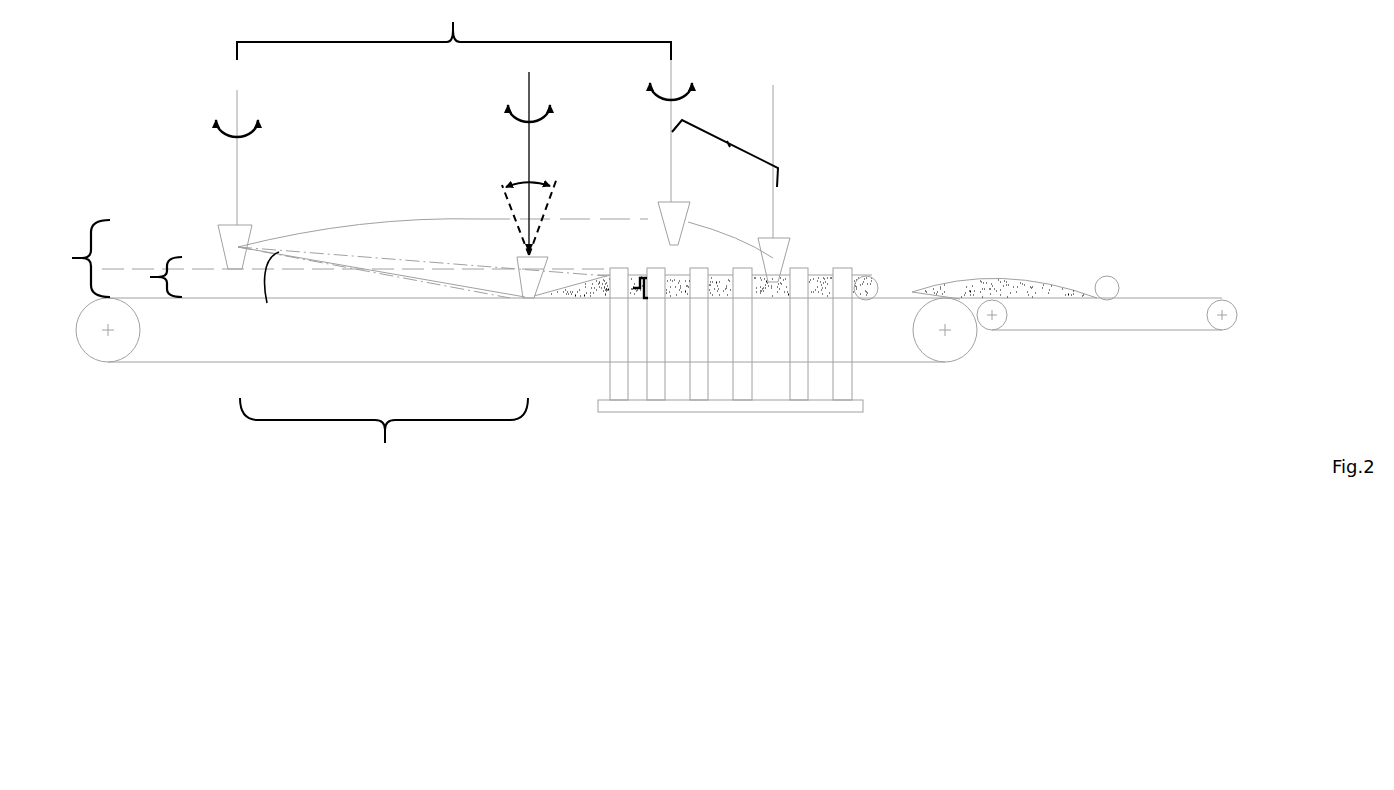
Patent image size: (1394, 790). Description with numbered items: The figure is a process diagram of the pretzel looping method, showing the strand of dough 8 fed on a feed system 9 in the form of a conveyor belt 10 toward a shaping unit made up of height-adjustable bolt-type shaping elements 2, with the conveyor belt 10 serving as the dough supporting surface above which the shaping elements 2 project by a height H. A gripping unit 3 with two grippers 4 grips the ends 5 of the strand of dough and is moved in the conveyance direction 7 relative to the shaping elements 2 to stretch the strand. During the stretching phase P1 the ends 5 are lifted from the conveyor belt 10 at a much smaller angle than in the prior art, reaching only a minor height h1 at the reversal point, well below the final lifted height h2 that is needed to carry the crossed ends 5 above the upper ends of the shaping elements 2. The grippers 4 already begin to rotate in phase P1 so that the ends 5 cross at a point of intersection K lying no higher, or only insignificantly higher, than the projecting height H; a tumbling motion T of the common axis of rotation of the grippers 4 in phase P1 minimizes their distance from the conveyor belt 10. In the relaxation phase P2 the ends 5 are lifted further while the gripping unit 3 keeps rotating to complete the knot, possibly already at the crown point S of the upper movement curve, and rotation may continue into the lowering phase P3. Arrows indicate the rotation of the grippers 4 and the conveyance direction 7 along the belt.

The bolt-type shaping elements 2 is at (802, 387).
The gripping unit 3 is at (248, 219).
The grippers 4 is at (230, 238).
The ends of the strand of dough 5 is at (562, 288).
The conveyance direction 7 is at (1114, 350).
The strand of dough 8 is at (820, 290).
The feed system 9 is at (1027, 294).
The conveyor belt 10 is at (892, 300).
The projecting height of the shaping elements H is at (633, 288).
The point of intersection K is at (350, 278).
The crown point S is at (688, 220).
The tumbling motion T is at (537, 178).
The height at the reversal point h1 is at (149, 277).
The final lifted height h2 is at (70, 258).
The stretching phase P1 is at (384, 435).
The relaxation phase P2 is at (454, 30).
The lowering phase P3 is at (725, 145).